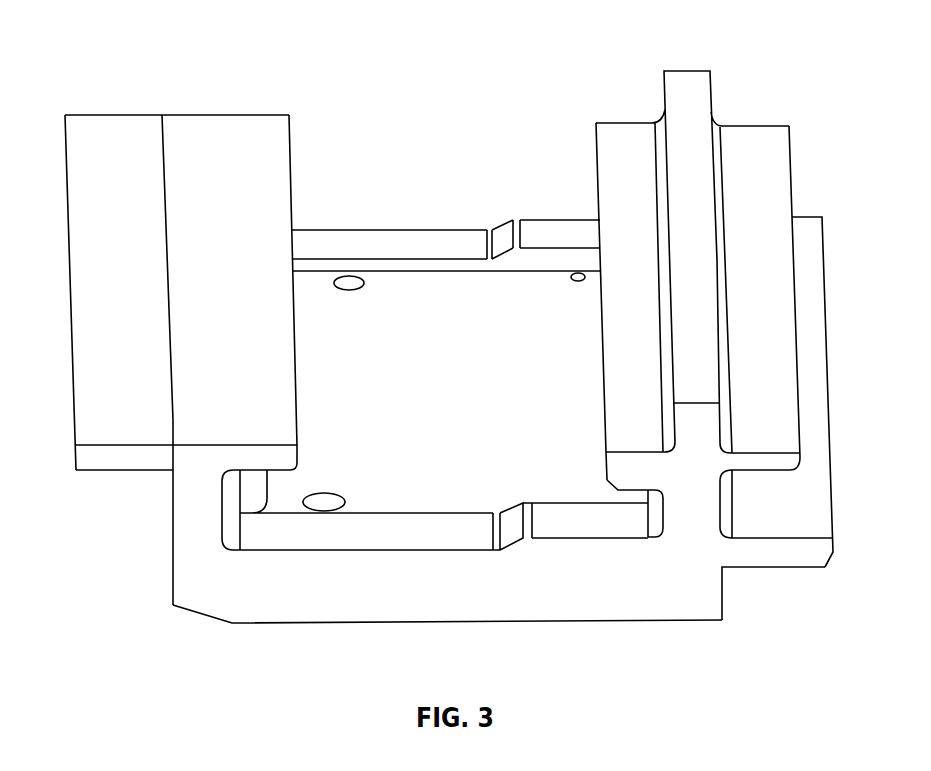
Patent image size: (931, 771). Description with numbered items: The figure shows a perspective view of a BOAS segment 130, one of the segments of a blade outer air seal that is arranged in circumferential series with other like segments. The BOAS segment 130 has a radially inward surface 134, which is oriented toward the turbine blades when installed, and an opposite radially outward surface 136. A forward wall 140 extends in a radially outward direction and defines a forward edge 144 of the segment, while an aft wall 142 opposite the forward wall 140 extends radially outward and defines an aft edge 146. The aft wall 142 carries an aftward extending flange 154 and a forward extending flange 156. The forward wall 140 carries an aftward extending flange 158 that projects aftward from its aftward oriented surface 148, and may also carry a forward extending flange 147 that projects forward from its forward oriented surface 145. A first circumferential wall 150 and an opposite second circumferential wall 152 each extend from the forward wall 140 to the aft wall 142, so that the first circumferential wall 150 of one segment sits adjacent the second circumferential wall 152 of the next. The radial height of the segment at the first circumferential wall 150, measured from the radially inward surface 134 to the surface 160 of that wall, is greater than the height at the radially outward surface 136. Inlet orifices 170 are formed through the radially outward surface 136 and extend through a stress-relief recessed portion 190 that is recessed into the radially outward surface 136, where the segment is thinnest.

The BOAS segment 130 is at (120, 43).
The radially inward surface 134 is at (434, 626).
The radially outward surface 136 is at (453, 393).
The forward wall 140 is at (182, 495).
The aft wall 142 is at (698, 528).
The forward edge 144 is at (170, 539).
The forward oriented surface 145 is at (167, 454).
The aft edge 146 is at (717, 94).
The forward extending flange 147 is at (92, 135).
The aftward oriented surface 148 is at (229, 509).
The first circumferential wall 150 is at (297, 607).
The second circumferential wall 152 is at (443, 226).
The aftward extending flange 154 is at (780, 223).
The forward extending flange 156 is at (645, 478).
The aftward extending flange 158 is at (268, 128).
The surface of the first circumferential wall 160 is at (375, 541).
The inlet orifice 170 is at (349, 275).
The stress-relief recessed portion 190 is at (364, 286).